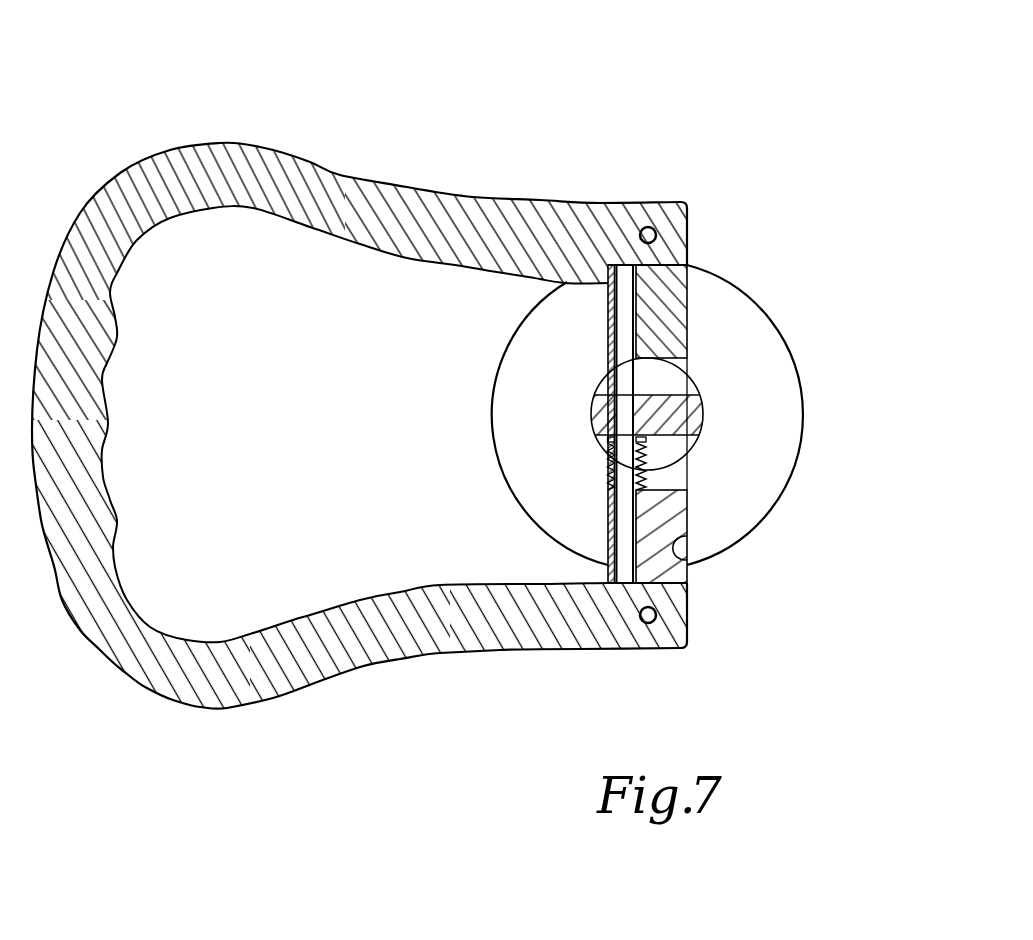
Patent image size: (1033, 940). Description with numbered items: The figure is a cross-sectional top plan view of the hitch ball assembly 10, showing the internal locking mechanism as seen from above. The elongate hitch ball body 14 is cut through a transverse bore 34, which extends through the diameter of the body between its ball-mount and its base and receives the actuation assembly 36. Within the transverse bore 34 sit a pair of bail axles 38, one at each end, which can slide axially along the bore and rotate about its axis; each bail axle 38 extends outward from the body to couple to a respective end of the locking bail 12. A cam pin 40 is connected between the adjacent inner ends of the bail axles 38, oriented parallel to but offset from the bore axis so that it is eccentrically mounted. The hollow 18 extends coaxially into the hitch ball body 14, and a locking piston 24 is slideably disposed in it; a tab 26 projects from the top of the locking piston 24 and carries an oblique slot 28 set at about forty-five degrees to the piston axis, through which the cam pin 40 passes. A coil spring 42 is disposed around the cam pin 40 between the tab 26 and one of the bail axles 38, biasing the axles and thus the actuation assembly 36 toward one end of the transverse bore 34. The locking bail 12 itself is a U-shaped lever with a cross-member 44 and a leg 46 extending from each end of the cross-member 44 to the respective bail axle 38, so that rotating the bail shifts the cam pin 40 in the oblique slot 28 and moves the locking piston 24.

The hitch ball assembly 10 is at (703, 68).
The locking bail 12 is at (285, 705).
The hitch ball body 14 is at (745, 535).
The hollow 18 is at (690, 447).
The locking piston 24 is at (673, 375).
The tab 26 is at (690, 383).
The oblique slot 28 is at (603, 393).
The transverse bore 34 is at (690, 563).
The actuation assembly 36 is at (606, 680).
The bail axles 38 is at (690, 502).
The cam pin 40 is at (607, 567).
The coil spring 42 is at (598, 465).
The cross-member 44 is at (117, 570).
The legs 46 is at (327, 243).